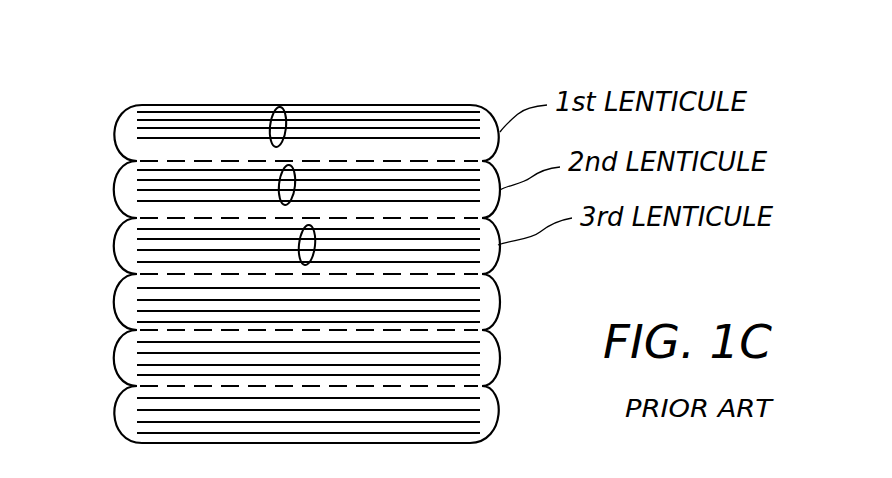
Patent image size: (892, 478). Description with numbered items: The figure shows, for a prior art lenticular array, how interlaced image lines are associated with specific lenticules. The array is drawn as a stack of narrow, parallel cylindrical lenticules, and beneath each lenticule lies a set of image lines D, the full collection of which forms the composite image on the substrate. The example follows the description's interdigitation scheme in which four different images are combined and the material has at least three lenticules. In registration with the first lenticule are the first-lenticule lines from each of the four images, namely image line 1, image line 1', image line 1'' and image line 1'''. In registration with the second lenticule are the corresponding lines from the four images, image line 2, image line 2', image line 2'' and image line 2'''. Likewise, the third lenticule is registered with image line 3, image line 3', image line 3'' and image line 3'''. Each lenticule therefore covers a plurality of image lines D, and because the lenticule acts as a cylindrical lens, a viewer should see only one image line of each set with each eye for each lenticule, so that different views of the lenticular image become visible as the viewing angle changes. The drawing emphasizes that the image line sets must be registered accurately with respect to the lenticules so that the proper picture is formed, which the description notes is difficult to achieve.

The line 1 of first image 1 is at (308, 65).
The line 1 of second image 1' is at (308, 73).
The line 1 of third image 1'' is at (308, 88).
The line 1 of fourth image 1''' is at (308, 104).
The line 2 of first image 2 is at (247, 176).
The line 2 of second image 2' is at (259, 196).
The line 2 of third image 2'' is at (269, 213).
The line 2 of fourth image 2''' is at (277, 234).
The line 3 of first image 3 is at (271, 268).
The line 3 of second image 3' is at (280, 287).
The line 3 of third image 3'' is at (346, 268).
The line 3 of fourth image 3''' is at (347, 290).
The image lines D is at (311, 228).